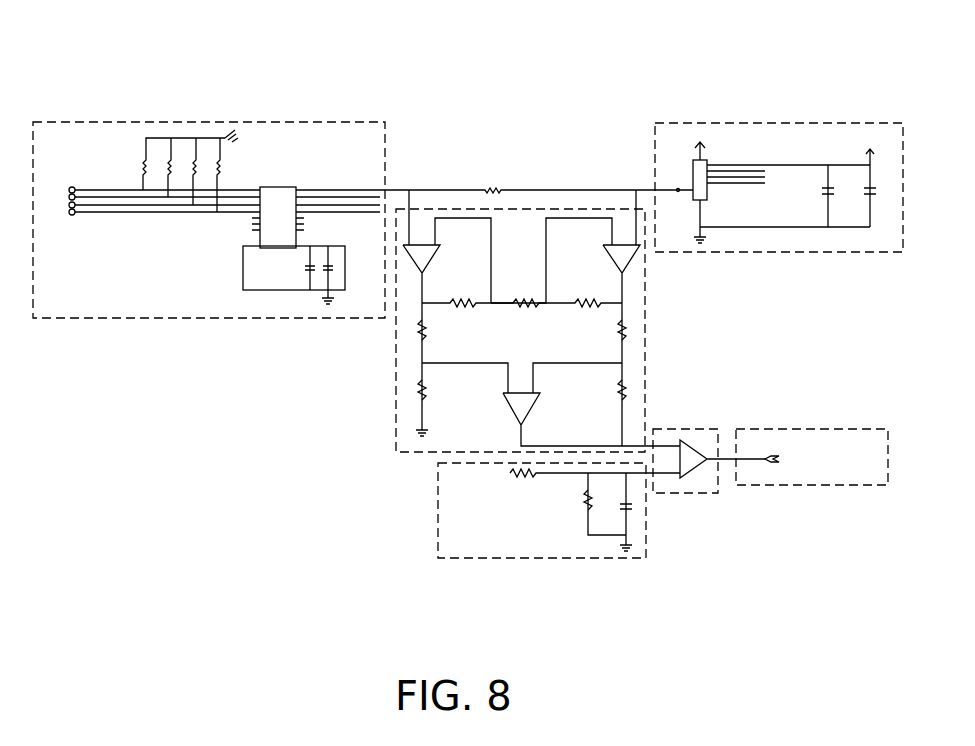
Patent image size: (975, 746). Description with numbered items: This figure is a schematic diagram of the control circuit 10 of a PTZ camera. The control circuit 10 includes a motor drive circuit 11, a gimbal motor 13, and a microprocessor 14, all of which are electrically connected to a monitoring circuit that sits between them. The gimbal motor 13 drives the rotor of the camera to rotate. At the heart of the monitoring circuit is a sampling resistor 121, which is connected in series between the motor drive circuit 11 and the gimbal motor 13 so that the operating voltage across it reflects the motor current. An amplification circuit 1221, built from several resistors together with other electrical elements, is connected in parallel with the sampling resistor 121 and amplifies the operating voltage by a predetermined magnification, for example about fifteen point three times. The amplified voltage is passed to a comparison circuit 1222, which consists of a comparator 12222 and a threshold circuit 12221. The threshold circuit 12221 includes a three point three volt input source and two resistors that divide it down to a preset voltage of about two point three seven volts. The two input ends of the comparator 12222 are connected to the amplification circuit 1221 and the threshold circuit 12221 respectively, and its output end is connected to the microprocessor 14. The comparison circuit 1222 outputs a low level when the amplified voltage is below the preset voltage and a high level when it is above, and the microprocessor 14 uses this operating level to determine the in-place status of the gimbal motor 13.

The control circuit 10 is at (560, 42).
The motor drive circuit 11 is at (273, 120).
The gimbal motor 13 is at (780, 123).
The microprocessor 14 is at (760, 429).
The sampling resistor 121 is at (497, 186).
The amplification circuit 1221 is at (396, 408).
The comparison circuit 1222 is at (670, 618).
The threshold circuit 12221 is at (578, 560).
The comparator 12222 is at (668, 494).